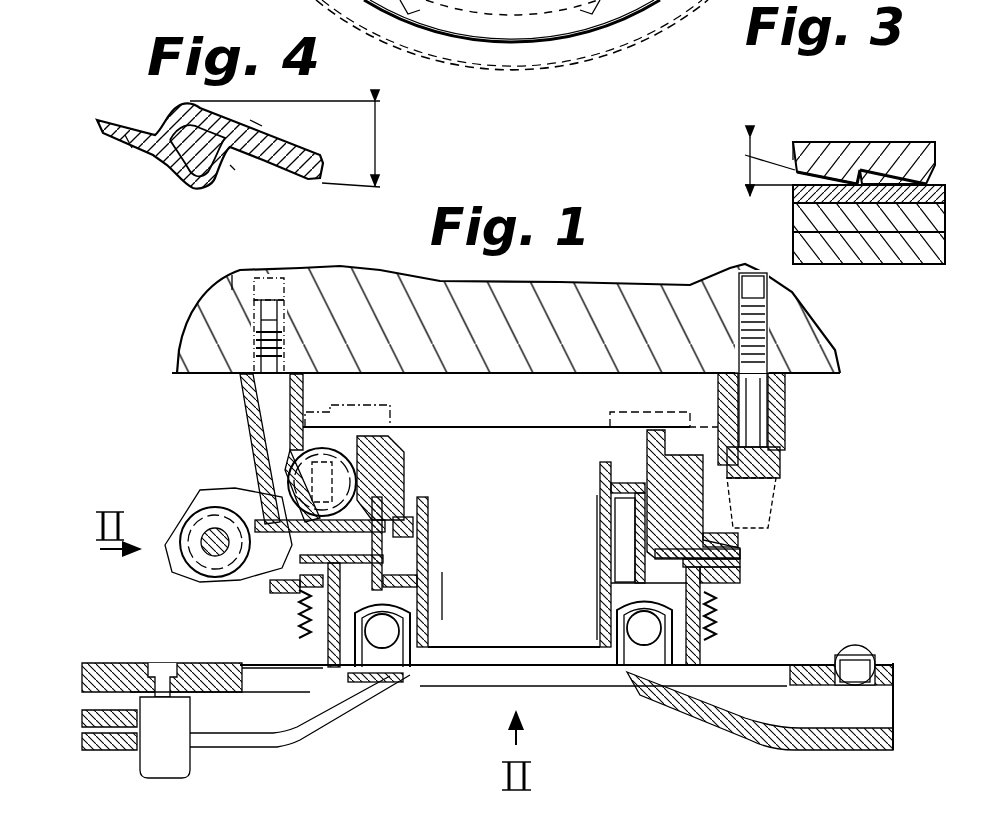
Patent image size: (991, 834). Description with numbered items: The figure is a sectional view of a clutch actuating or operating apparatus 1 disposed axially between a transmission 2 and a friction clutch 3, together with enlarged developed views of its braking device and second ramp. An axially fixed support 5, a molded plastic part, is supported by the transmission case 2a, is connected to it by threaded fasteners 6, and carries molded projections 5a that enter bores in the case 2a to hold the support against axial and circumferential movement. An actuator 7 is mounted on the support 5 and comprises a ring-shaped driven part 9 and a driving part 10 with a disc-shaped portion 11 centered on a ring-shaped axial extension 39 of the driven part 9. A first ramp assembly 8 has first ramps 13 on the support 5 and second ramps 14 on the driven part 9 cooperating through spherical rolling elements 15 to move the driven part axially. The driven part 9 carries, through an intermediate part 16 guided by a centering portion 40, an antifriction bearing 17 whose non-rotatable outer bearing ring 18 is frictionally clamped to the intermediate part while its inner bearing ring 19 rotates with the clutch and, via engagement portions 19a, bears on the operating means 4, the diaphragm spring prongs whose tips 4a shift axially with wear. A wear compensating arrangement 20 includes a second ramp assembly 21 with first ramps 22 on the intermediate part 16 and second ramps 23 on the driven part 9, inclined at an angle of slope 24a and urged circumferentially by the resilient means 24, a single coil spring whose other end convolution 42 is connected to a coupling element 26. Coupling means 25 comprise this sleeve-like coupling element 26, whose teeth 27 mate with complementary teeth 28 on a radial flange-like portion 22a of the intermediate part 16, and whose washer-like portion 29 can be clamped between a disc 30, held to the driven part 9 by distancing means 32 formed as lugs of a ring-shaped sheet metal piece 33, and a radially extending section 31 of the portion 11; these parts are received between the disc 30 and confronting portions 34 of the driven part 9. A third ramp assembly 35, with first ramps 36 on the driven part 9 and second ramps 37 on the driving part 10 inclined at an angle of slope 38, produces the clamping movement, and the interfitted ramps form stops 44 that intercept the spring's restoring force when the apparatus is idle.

In FIG. 1, the clutch actuating or operating apparatus 1 is at (150, 351).
In FIG. 1, the transmission 2 is at (218, 318).
In FIG. 1, the transmission case 2a is at (233, 288).
In FIG. 1, the friction clutch 3 is at (118, 664).
In FIG. 1, the operating means 4 is at (213, 742).
In FIG. 1, the operating portions 4a is at (393, 692).
In FIG. 1, the support 5 is at (243, 393).
In FIG. 1, the projections 5a is at (280, 322).
In FIG. 1, the threaded fasteners 6 is at (768, 373).
In FIG. 1, the actuating means 7 is at (230, 595).
In FIG. 1, the first ramp assembly 8 is at (260, 470).
In FIG. 4, the driven part 9 is at (110, 123).
In FIG. 3, the driven part 9 is at (796, 150).
In FIG. 1, the driven part 9 is at (660, 520).
In FIG. 3, the driving part 10 is at (800, 195).
In FIG. 1, the driving part 10 is at (240, 525).
In FIG. 1, the disc-shaped portion 11 is at (650, 470).
In FIG. 1, the first ramps 13 is at (250, 438).
In FIG. 1, the second ramps 14 is at (372, 482).
In FIG. 1, the rolling elements 15 is at (332, 470).
In FIG. 4, the intermediate part 16 is at (126, 150).
In FIG. 1, the intermediate part 16 is at (603, 580).
In FIG. 1, the antifriction bearing 17 is at (645, 640).
In FIG. 1, the outer bearing ring 18 is at (691, 668).
In FIG. 1, the inner bearing ring 19 is at (622, 668).
In FIG. 1, the engagement portions 19a is at (365, 685).
In FIG. 1, the wear compensating arrangement 20 is at (715, 591).
In FIG. 1, the second ramp assembly 21 is at (596, 523).
In FIG. 4, the first ramps 22 is at (262, 160).
In FIG. 1, the first ramps 22 is at (600, 491).
In FIG. 1, the radial flange-like portion 22a is at (698, 668).
In FIG. 4, the second ramps 23 is at (268, 143).
In FIG. 1, the second ramps 23 is at (428, 518).
In FIG. 1, the resilient means 24 is at (718, 635).
In FIG. 4, the angle of slope 24a is at (308, 144).
In FIG. 1, the coupling means 25 is at (752, 557).
In FIG. 1, the coupling element 26 is at (700, 668).
In FIG. 1, the teeth 27 is at (745, 706).
In FIG. 1, the complementary teeth 28 is at (720, 541).
In FIG. 1, the washer-like portion 29 is at (742, 564).
In FIG. 3, the disc 30 is at (920, 250).
In FIG. 1, the disc 30 is at (742, 580).
In FIG. 3, the radially extending section 31 is at (835, 222).
In FIG. 1, the radially extending section 31 is at (745, 554).
In FIG. 1, the distancing means 32 is at (280, 600).
In FIG. 1, the ring-shaped sheet metal piece 33 is at (245, 498).
In FIG. 1, the confronting portions 34 is at (668, 540).
In FIG. 3, the third ramp assembly 35 is at (740, 181).
In FIG. 1, the third ramp assembly 35 is at (208, 566).
In FIG. 3, the first ramps 36 is at (905, 176).
In FIG. 3, the second ramps 37 is at (812, 165).
In FIG. 3, the angle of slope 38 is at (790, 182).
In FIG. 1, the ring-shaped axial extension 39 is at (428, 555).
In FIG. 1, the centering portion 40 is at (614, 540).
In FIG. 1, the other end convolution 42 is at (298, 638).
In FIG. 3, the stops 44 is at (868, 172).